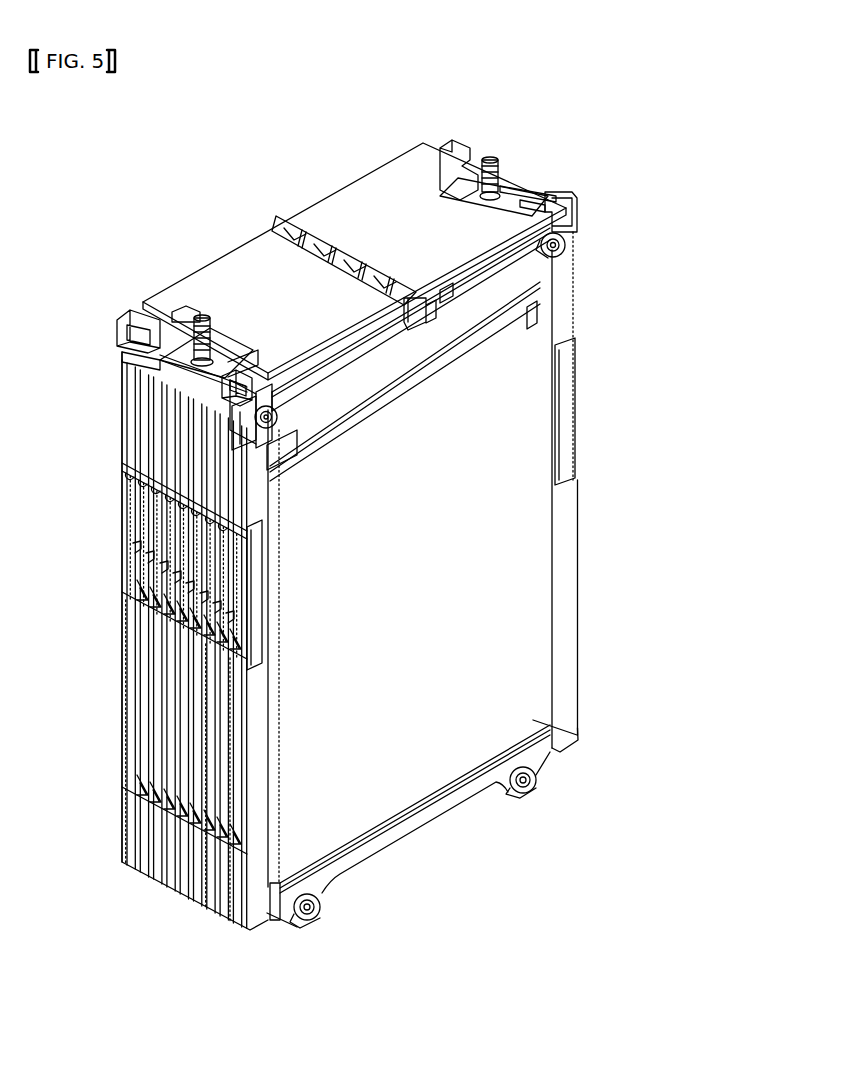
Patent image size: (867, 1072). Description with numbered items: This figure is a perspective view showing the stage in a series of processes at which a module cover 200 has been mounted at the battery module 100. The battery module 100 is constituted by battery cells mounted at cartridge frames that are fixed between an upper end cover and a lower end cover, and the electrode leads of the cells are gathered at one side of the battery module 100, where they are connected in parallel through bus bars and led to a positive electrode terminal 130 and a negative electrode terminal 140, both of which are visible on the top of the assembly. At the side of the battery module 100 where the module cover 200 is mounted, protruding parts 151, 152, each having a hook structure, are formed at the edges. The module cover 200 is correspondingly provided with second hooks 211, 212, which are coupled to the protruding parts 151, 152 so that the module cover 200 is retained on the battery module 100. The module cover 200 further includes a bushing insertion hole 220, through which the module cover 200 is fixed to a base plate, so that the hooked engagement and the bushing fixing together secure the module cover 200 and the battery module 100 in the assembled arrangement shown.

The battery module 100 is at (577, 389).
The module cover 200 is at (574, 205).
The positive electrode terminal 130 is at (203, 332).
The negative electrode terminal 140 is at (497, 158).
The protruding part 151 is at (124, 354).
The protruding part 152 is at (245, 414).
The second hook 211 is at (121, 326).
The second hook 212 is at (230, 388).
The bushing insertion hole 220 is at (414, 332).